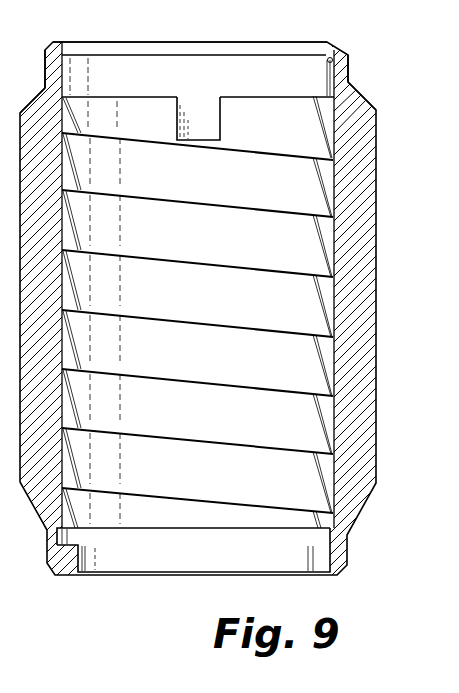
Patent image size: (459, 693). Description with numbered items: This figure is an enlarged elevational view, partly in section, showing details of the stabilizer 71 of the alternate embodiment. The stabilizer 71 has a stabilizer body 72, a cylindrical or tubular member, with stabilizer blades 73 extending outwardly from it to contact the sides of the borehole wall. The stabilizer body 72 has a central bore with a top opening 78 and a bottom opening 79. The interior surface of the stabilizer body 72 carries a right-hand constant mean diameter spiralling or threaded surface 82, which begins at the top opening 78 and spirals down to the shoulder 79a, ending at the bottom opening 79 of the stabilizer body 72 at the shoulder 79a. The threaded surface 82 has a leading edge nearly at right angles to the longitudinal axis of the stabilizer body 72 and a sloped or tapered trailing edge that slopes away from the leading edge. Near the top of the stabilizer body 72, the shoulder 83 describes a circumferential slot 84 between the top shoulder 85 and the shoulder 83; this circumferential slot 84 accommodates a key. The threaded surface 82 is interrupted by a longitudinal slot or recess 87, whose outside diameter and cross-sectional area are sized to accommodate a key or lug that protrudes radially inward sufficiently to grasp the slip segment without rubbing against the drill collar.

The stabilizer 71 is at (232, 311).
The stabilizer body 72 is at (358, 403).
The stabilizer blades 73 is at (377, 267).
The top opening 78 is at (341, 44).
The bottom opening 79 is at (250, 567).
The shoulder 79a is at (336, 538).
The right-hand spiralling or threaded surface 82 is at (336, 202).
The shoulder 83 is at (341, 107).
The circumferential slot 84 is at (349, 80).
The top shoulder 85 is at (340, 60).
The longitudinal slot or recess 87 is at (222, 124).